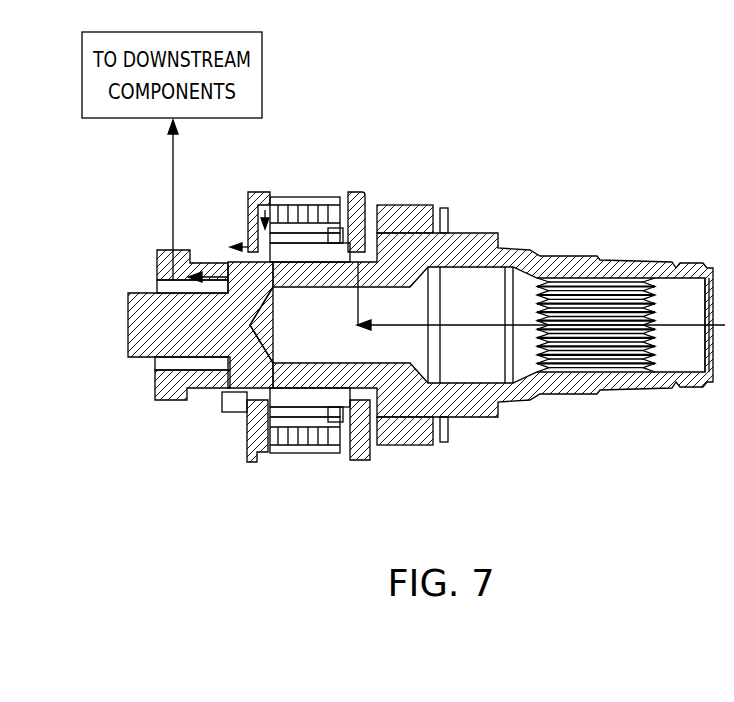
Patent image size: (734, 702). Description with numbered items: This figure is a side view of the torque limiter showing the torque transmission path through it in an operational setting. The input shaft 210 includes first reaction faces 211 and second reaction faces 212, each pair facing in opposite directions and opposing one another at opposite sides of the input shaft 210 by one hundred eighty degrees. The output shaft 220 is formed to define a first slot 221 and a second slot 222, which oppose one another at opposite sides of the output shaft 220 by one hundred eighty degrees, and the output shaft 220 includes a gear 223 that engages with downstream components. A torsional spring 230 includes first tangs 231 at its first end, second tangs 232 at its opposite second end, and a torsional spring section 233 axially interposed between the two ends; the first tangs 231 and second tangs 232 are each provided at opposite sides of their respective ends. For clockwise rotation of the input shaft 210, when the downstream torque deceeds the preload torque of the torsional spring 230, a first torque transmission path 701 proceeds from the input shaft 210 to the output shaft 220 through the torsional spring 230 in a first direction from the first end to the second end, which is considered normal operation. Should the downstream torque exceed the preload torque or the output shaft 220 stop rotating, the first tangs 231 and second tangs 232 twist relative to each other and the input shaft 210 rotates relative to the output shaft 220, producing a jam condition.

The input shaft 210 is at (488, 410).
The first reaction faces 211 is at (385, 222).
The second reaction faces 212 is at (240, 402).
The output shaft 220 is at (155, 374).
The first slot 221 is at (320, 250).
The second slot 222 is at (312, 442).
The gear 223 is at (165, 243).
The torsional spring 230 is at (258, 445).
The first tangs 231 is at (360, 250).
The second tangs 232 is at (252, 195).
The torsional spring section 233 is at (303, 208).
The first torque transmission path 701 is at (170, 258).